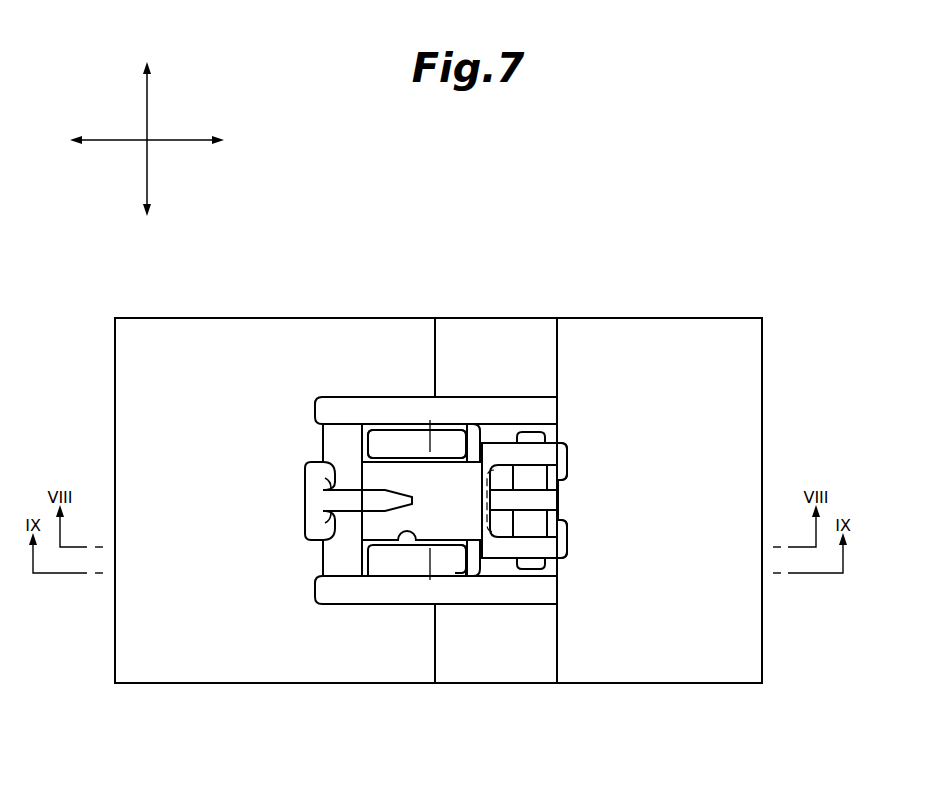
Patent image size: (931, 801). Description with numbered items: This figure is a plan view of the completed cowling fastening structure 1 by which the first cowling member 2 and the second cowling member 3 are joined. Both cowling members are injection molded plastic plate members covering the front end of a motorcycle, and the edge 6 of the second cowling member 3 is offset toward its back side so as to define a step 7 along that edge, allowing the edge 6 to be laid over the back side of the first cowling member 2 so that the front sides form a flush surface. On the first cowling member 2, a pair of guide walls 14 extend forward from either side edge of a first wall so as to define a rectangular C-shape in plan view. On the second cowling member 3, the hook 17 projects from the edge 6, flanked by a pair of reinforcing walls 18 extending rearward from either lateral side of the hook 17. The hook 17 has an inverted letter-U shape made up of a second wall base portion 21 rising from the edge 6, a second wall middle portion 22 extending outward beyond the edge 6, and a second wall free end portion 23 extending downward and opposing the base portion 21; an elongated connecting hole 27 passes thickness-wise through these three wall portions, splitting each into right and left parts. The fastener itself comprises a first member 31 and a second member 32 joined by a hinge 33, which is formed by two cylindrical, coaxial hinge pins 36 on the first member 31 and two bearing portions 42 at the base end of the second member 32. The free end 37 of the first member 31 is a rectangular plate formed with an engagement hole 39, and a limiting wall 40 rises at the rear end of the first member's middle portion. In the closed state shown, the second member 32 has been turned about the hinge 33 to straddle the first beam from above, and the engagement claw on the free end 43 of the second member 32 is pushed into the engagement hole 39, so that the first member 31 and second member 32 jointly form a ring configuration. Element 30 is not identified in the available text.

The cowling fastening structure 1 is at (457, 311).
The first cowling member 2 is at (196, 338).
The second cowling member 3 is at (683, 338).
The edge of the second cowling member 6 is at (522, 668).
The step 7 is at (557, 655).
The guide walls 14 is at (333, 407).
The hook 17 is at (423, 388).
The reinforcing walls 18 is at (545, 415).
The second wall base portion 21 is at (455, 435).
The second wall middle portion 22 is at (402, 418).
The second wall free end portion 23 is at (375, 440).
The connecting hole 27 is at (400, 542).
The lock portion 30 is at (292, 530).
The first member 31 is at (302, 548).
The second member 32 is at (577, 451).
The hinge 33 is at (577, 469).
The hinge pins 36 is at (545, 520).
The free end of the first member 37 is at (313, 475).
The engagement hole 39 is at (327, 512).
The limiting wall 40 is at (478, 428).
The bearing portions 42 is at (565, 550).
The free end of the second member 43 is at (337, 448).